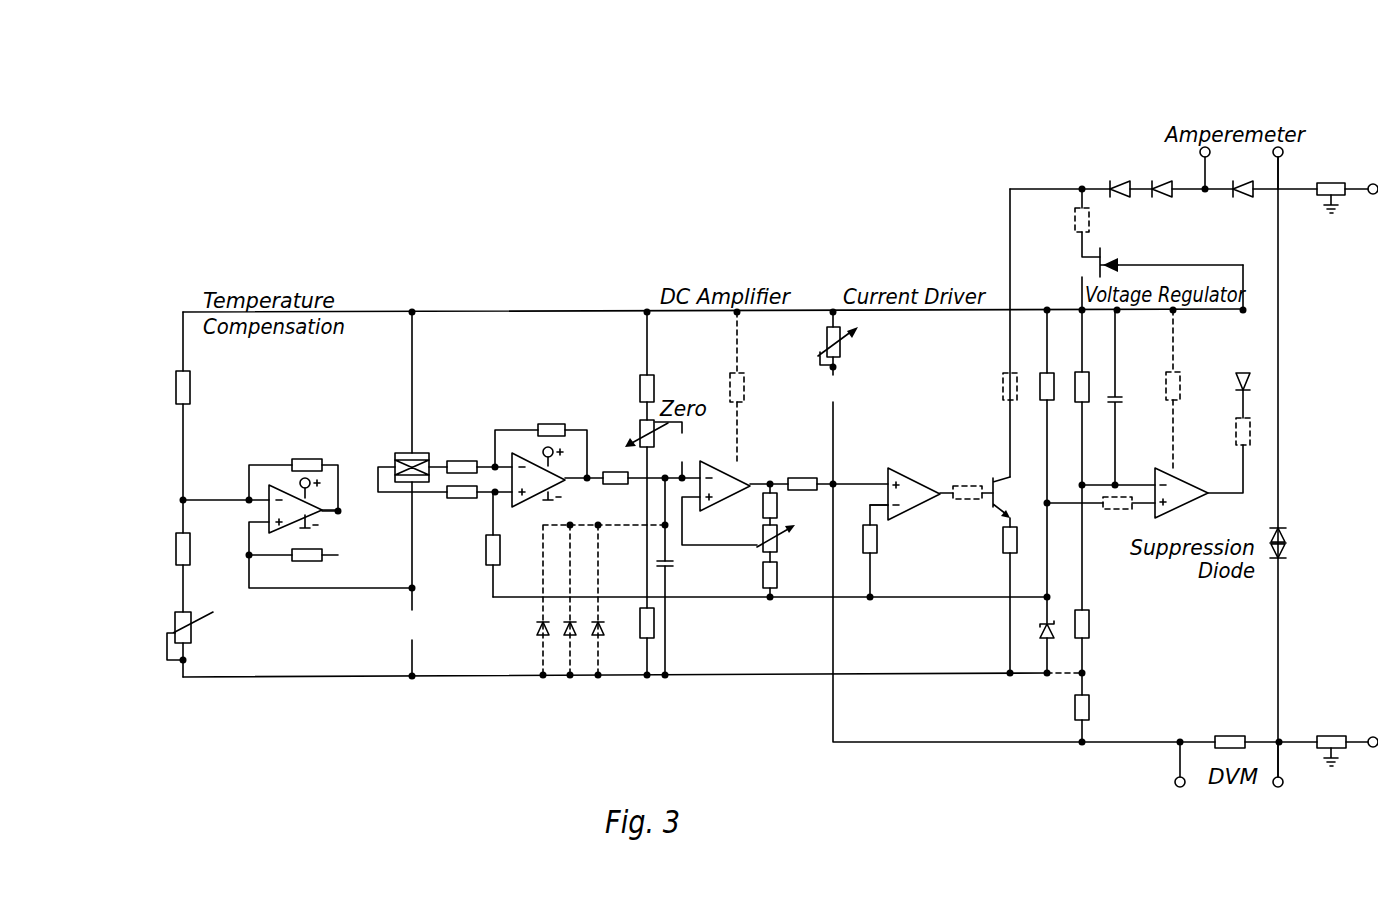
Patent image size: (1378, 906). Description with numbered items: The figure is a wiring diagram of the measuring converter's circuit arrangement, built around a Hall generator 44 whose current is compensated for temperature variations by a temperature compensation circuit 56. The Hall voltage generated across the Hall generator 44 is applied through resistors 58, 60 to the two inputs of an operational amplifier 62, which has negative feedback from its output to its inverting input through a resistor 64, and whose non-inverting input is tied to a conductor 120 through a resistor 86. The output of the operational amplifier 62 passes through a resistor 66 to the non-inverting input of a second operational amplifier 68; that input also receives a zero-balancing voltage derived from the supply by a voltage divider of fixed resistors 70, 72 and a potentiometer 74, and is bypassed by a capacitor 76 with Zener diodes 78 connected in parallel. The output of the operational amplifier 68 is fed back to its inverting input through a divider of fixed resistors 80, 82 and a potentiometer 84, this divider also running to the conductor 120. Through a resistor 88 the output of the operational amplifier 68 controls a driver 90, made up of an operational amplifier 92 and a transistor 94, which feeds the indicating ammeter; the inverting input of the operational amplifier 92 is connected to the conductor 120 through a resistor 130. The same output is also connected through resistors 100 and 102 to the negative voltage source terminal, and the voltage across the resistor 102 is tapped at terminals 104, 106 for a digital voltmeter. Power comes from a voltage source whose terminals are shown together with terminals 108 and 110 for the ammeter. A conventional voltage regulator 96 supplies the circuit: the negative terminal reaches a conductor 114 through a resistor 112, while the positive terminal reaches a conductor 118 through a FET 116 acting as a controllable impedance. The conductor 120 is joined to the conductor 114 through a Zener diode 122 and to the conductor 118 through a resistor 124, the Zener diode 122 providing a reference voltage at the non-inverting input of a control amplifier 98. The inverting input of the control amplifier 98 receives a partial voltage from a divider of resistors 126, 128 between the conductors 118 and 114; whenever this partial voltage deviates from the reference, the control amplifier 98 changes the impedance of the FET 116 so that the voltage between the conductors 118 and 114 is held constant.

The Hall generator 44 is at (431, 462).
The temperature compensation circuit 56 is at (333, 446).
The resistor 58 is at (468, 462).
The resistor 60 is at (459, 501).
The operational amplifier 62 is at (521, 495).
The resistor 64 is at (553, 427).
The resistor 66 is at (610, 485).
The operational amplifier 68 is at (713, 471).
The fixed resistor 70 is at (655, 393).
The fixed resistor 72 is at (655, 623).
The potentiometer 74 is at (637, 424).
The capacitor 76 is at (670, 565).
The Zener diodes 78 is at (540, 628).
The fixed resistor 80 is at (783, 500).
The fixed resistor 82 is at (778, 576).
The potentiometer 84 is at (719, 521).
The resistor 86 is at (487, 549).
The resistor 88 is at (801, 478).
The driver 90 is at (922, 471).
The operational amplifier 92 is at (899, 506).
The transistor 94 is at (1003, 508).
The voltage regulator 96 is at (1203, 252).
The control amplifier 98 is at (1170, 506).
The resistor 100 is at (826, 545).
The resistor 102 is at (1240, 725).
The terminal 104 is at (1175, 782).
The terminal 106 is at (1285, 786).
The amperemeter terminal 108 is at (1200, 153).
The amperemeter terminal 110 is at (1283, 158).
The resistor 112 is at (1085, 720).
The conductor 114 is at (893, 675).
The FET 116 is at (1101, 257).
The conductor 118 is at (523, 310).
The conductor 120 is at (907, 598).
The Zener diode 122 is at (1036, 631).
The resistor 124 is at (1040, 378).
The resistor 126 is at (1087, 380).
The resistor 128 is at (1085, 636).
The resistor 130 is at (872, 549).